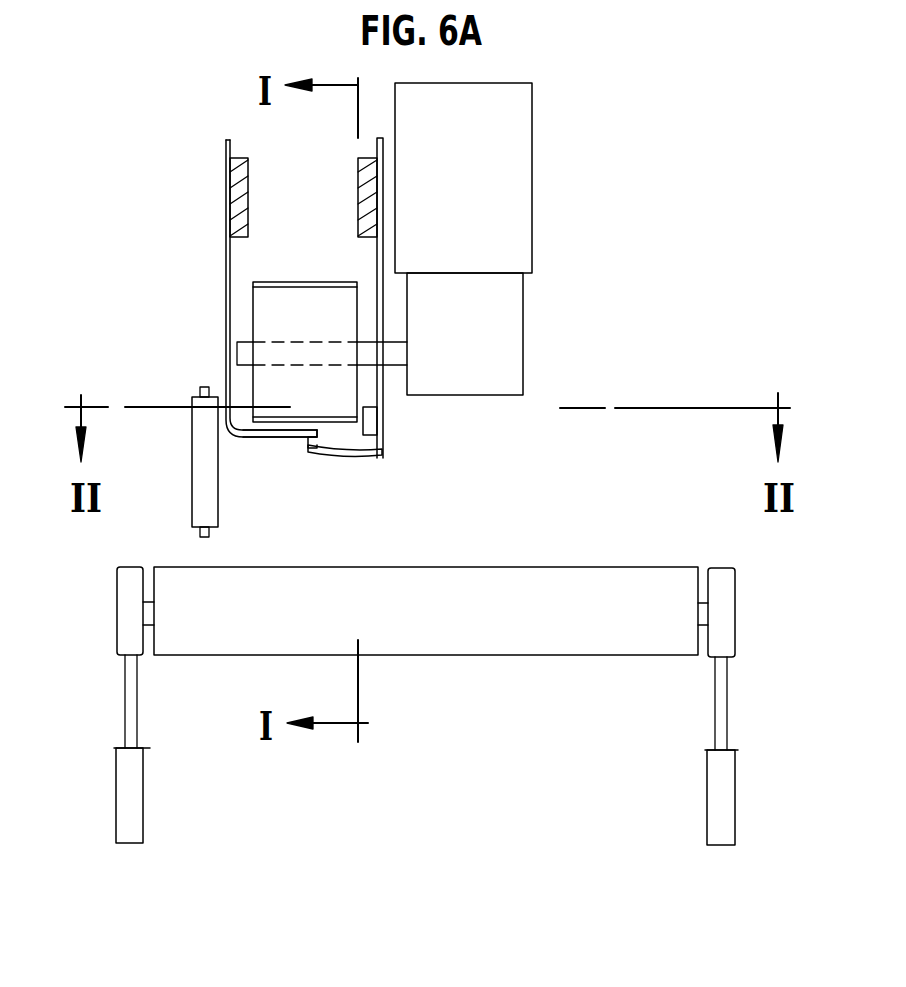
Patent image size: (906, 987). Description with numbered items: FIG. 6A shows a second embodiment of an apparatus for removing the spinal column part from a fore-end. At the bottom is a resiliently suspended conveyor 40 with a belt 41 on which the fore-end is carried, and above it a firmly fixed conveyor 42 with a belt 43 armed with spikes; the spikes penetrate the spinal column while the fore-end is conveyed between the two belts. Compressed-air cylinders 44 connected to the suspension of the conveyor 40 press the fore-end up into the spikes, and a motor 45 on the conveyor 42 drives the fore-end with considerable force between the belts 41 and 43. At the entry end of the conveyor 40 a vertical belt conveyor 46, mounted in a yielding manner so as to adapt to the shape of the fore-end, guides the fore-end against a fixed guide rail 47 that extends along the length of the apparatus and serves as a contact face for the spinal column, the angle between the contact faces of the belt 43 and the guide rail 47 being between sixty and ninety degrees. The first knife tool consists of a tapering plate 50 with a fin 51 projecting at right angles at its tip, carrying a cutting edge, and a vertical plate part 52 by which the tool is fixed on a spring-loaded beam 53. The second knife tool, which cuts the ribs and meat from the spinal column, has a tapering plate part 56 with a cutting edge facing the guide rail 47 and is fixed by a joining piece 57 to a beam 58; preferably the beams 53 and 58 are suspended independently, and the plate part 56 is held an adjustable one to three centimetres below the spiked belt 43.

The resiliently suspended conveyor 40 is at (730, 633).
The belt 41 is at (585, 580).
The firmly fixed conveyor 42 is at (278, 297).
The belt armed with spikes 43 is at (327, 287).
The compressed-air cylinders 44 is at (133, 823).
The motor 45 is at (513, 173).
The vertical belt conveyor 46 is at (200, 470).
The guide rail 47 is at (372, 418).
The tapering plate 50 is at (250, 438).
The fin 51 is at (307, 442).
The vertical plate part 52 is at (227, 248).
The spring-loaded beam 53 is at (238, 175).
The tapering plate part 56 is at (345, 455).
The joining piece 57 is at (378, 255).
The beam 58 is at (362, 177).